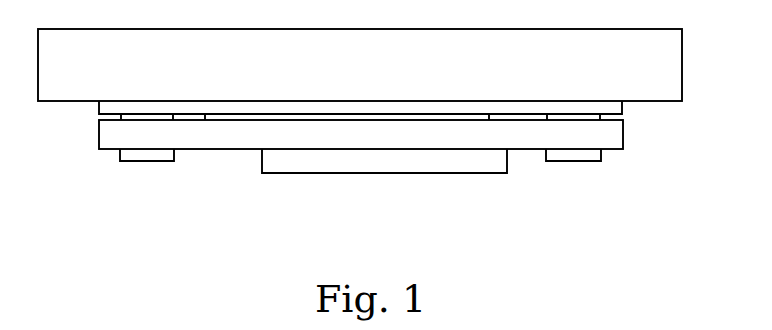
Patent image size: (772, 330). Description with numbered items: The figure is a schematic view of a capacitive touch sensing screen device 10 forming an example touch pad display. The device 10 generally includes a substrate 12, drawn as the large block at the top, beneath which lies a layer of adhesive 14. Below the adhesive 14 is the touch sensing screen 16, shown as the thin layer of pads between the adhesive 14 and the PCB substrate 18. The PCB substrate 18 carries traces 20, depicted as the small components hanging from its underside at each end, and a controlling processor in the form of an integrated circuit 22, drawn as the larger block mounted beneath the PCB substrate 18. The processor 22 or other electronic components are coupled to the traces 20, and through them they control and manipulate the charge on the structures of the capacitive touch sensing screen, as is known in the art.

The capacitive touch sensing screen device 10 is at (671, 217).
The substrate 12 is at (683, 65).
The adhesive 14 is at (623, 107).
The touch sensing screen 16 is at (241, 116).
The PCB substrate 18 is at (99, 135).
The traces 20 is at (147, 161).
The integrated circuit 22 is at (463, 173).